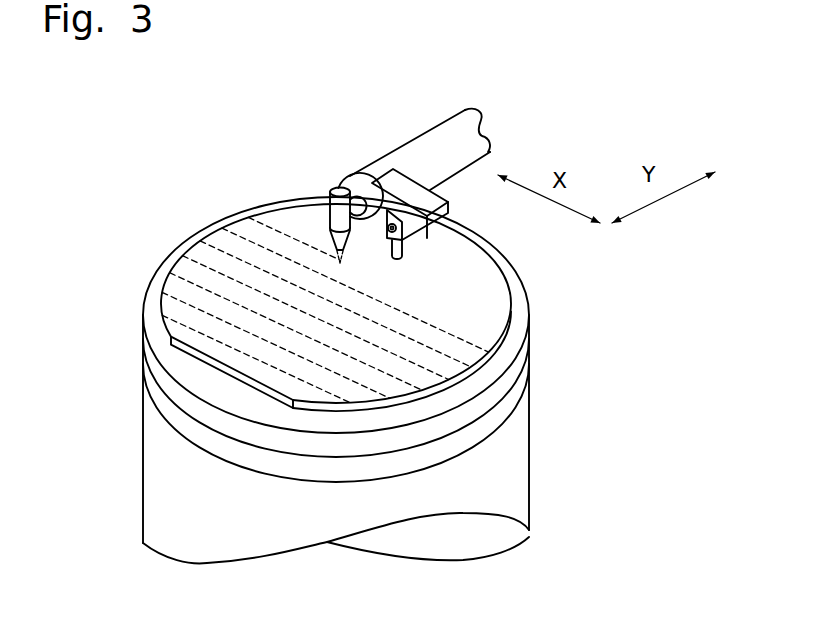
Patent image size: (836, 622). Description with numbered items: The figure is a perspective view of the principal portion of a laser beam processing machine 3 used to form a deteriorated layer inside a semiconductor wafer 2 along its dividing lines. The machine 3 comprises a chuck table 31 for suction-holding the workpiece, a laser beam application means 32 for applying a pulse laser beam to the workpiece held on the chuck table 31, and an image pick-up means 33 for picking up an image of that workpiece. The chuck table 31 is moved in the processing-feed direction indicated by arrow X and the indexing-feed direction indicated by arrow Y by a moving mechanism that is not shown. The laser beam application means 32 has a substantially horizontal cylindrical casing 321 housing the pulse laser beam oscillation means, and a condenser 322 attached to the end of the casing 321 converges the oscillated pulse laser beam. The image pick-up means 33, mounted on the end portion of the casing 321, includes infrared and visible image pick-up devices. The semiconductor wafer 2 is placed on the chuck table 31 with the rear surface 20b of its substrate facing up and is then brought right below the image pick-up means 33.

The semiconductor wafer 2 is at (510, 287).
The laser beam processing machine 3 is at (202, 180).
The rear surface 20b is at (208, 258).
The chuck table 31 is at (141, 436).
The laser beam application means 32 is at (382, 148).
The cylindrical casing 321 is at (448, 133).
The condenser 322 is at (338, 188).
The image pick-up means 33 is at (443, 222).